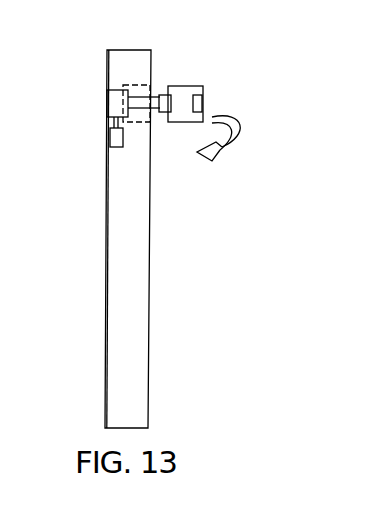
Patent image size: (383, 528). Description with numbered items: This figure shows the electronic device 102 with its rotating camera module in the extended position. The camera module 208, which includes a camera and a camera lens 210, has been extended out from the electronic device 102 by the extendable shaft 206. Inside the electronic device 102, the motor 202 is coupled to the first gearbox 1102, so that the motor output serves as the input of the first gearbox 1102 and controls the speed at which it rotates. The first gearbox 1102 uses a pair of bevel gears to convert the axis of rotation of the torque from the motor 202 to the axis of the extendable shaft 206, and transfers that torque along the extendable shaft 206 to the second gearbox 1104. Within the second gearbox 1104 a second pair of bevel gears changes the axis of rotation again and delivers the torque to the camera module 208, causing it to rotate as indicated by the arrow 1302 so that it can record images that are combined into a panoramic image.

The electronic device 102 is at (150, 282).
The motor 202 is at (112, 137).
The extendable shaft 206 is at (141, 100).
The camera module 208 is at (187, 93).
The camera lens 210 is at (203, 101).
The first gearbox 1102 is at (108, 102).
The second gearbox 1104 is at (185, 96).
The rotation direction arrow 1302 is at (243, 143).